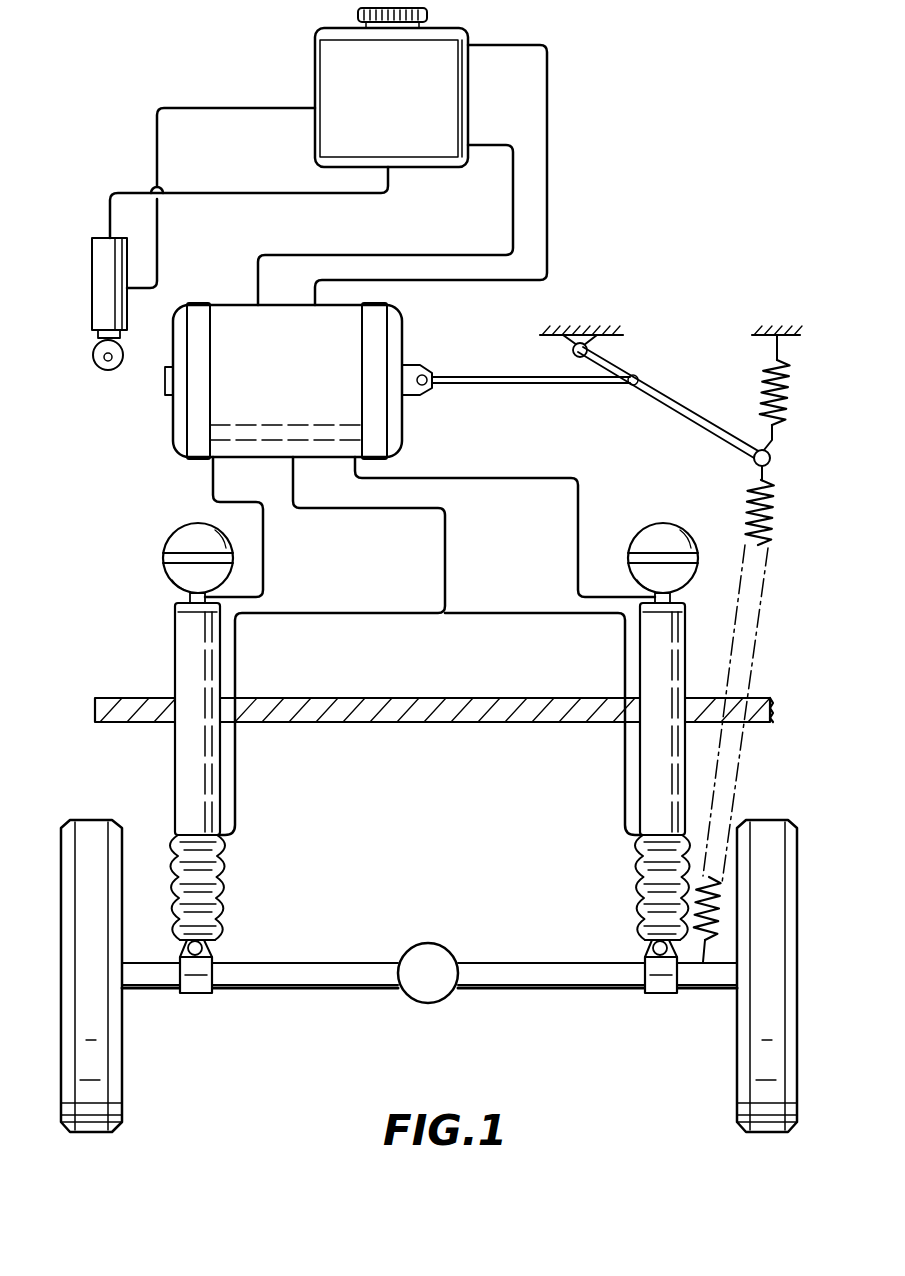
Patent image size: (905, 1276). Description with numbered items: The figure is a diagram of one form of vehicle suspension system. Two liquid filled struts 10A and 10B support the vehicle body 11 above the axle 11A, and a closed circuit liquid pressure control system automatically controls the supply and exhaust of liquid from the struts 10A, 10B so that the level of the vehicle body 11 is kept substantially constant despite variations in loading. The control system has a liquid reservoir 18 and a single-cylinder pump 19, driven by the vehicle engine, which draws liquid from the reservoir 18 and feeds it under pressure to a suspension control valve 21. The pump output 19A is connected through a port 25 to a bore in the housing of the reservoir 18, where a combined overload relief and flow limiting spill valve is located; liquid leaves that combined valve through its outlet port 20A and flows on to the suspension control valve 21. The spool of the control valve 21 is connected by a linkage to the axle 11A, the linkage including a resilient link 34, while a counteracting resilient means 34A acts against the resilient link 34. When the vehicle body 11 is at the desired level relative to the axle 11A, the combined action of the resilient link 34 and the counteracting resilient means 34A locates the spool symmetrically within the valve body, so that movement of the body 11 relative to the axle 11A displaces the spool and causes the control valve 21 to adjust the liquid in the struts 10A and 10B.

The liquid filled strut 10A is at (190, 772).
The liquid filled strut 10B is at (668, 788).
The vehicle body 11 is at (577, 718).
The axle 11A is at (345, 968).
The liquid reservoir 18 is at (342, 60).
The single-cylinder pump 19 is at (108, 292).
The pump output 19A is at (110, 238).
The outlet port 20A is at (513, 147).
The suspension control valve 21 is at (232, 406).
The port 25 is at (392, 170).
The resilient link 34 is at (748, 505).
The counteracting resilient means 34A is at (766, 383).